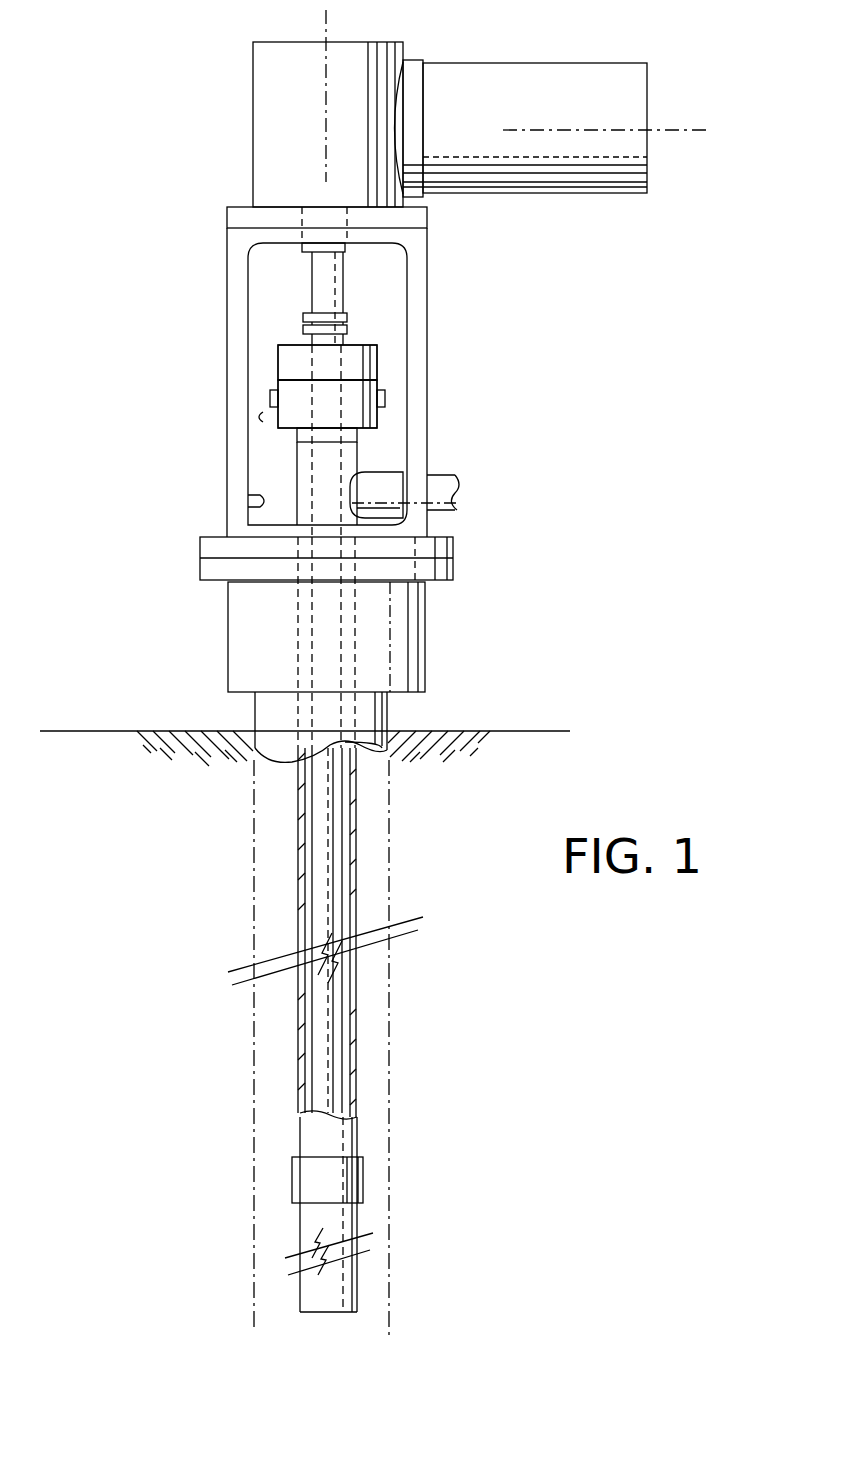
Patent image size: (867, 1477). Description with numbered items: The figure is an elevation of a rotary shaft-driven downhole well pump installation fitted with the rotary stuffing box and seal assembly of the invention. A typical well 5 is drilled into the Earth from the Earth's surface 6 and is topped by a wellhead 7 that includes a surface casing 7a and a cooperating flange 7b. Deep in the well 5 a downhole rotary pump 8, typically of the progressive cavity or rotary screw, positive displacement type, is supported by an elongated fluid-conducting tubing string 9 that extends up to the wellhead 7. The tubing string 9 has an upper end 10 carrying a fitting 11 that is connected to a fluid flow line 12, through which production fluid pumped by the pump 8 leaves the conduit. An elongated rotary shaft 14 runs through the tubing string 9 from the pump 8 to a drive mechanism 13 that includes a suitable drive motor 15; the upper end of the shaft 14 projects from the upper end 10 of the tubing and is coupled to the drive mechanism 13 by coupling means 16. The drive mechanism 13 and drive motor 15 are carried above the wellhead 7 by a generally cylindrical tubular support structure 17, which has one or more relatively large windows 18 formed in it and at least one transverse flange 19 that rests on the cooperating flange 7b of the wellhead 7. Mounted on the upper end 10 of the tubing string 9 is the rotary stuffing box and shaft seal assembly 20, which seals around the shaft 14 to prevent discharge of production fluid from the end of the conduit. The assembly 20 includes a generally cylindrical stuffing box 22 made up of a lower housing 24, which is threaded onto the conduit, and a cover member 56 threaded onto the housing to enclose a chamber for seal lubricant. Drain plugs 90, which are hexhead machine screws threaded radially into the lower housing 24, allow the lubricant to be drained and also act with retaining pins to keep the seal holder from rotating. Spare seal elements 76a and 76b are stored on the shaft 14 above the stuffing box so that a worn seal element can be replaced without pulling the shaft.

The well 5 is at (382, 1170).
The Earth's surface 6 is at (491, 730).
The wellhead 7 is at (230, 655).
The surface casing 7a is at (390, 707).
The flange 7b is at (453, 565).
The downhole rotary pump 8 is at (357, 1263).
The tubing string 9 is at (358, 1040).
The upper end 10 is at (297, 467).
The fitting 11 is at (373, 503).
The fluid flow line 12 is at (450, 475).
The drive mechanism 13 is at (355, 52).
The rotary shaft 14 is at (312, 280).
The drive motor 15 is at (507, 63).
The coupling means 16 is at (310, 255).
The tubular support structure 17 is at (227, 425).
The window 18 is at (258, 505).
The transverse flange 19 is at (455, 546).
The rotary stuffing box and shaft seal assembly 20 is at (397, 363).
The stuffing box 22 is at (385, 418).
The lower housing 24 is at (290, 432).
The cover member 56 is at (278, 362).
The spare seal element 76a is at (303, 330).
The spare seal element 76b is at (343, 313).
The drain plug 90 is at (270, 395).